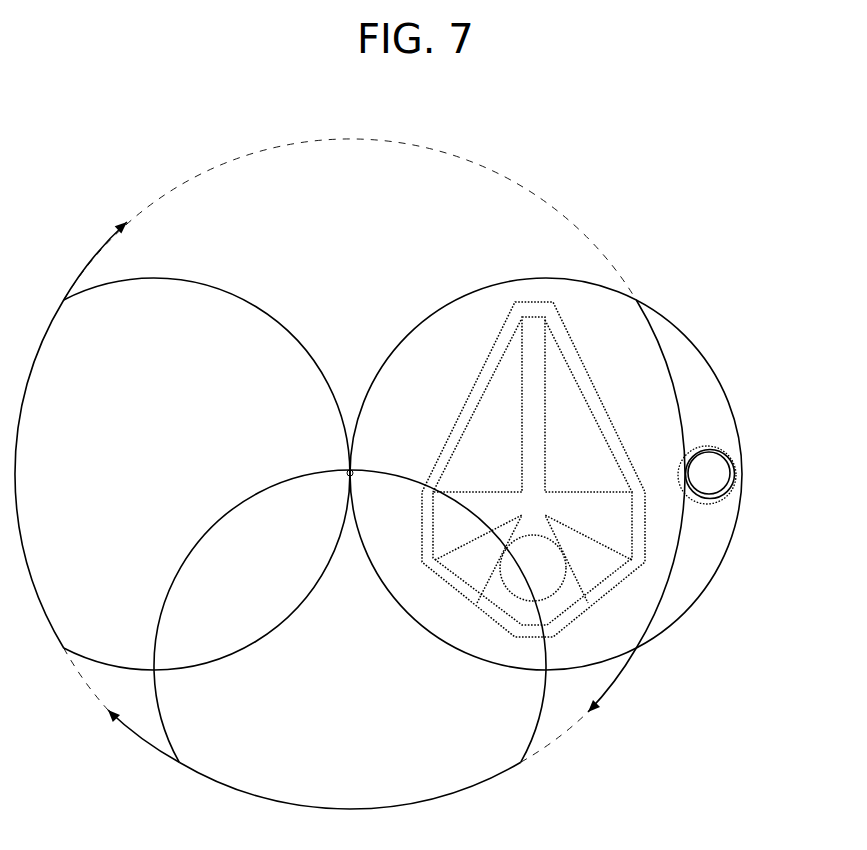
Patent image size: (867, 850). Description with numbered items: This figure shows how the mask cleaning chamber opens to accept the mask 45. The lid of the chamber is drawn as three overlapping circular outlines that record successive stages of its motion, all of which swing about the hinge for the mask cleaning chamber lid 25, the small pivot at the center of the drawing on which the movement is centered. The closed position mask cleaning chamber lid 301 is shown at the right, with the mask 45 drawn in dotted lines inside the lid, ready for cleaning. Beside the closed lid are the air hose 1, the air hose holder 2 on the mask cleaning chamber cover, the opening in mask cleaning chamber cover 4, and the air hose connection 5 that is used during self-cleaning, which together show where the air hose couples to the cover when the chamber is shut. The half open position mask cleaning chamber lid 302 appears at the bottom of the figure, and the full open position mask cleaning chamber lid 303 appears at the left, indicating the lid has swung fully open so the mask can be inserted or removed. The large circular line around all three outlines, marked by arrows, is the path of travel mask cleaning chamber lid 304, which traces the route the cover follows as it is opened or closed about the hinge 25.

The air hose 1 is at (713, 473).
The air hose holder 2 is at (713, 415).
The opening in mask cleaning chamber cover 4 is at (690, 453).
The air hose connection 5 is at (732, 485).
The hinge for mask cleaning chamber lid 25 is at (350, 470).
The mask 45 is at (535, 427).
The closed position mask cleaning chamber lid 301 is at (546, 474).
The half open position mask cleaning chamber lid 302 is at (350, 616).
The full open position mask cleaning chamber lid 303 is at (207, 474).
The path of travel mask cleaning chamber lid 304 is at (350, 483).